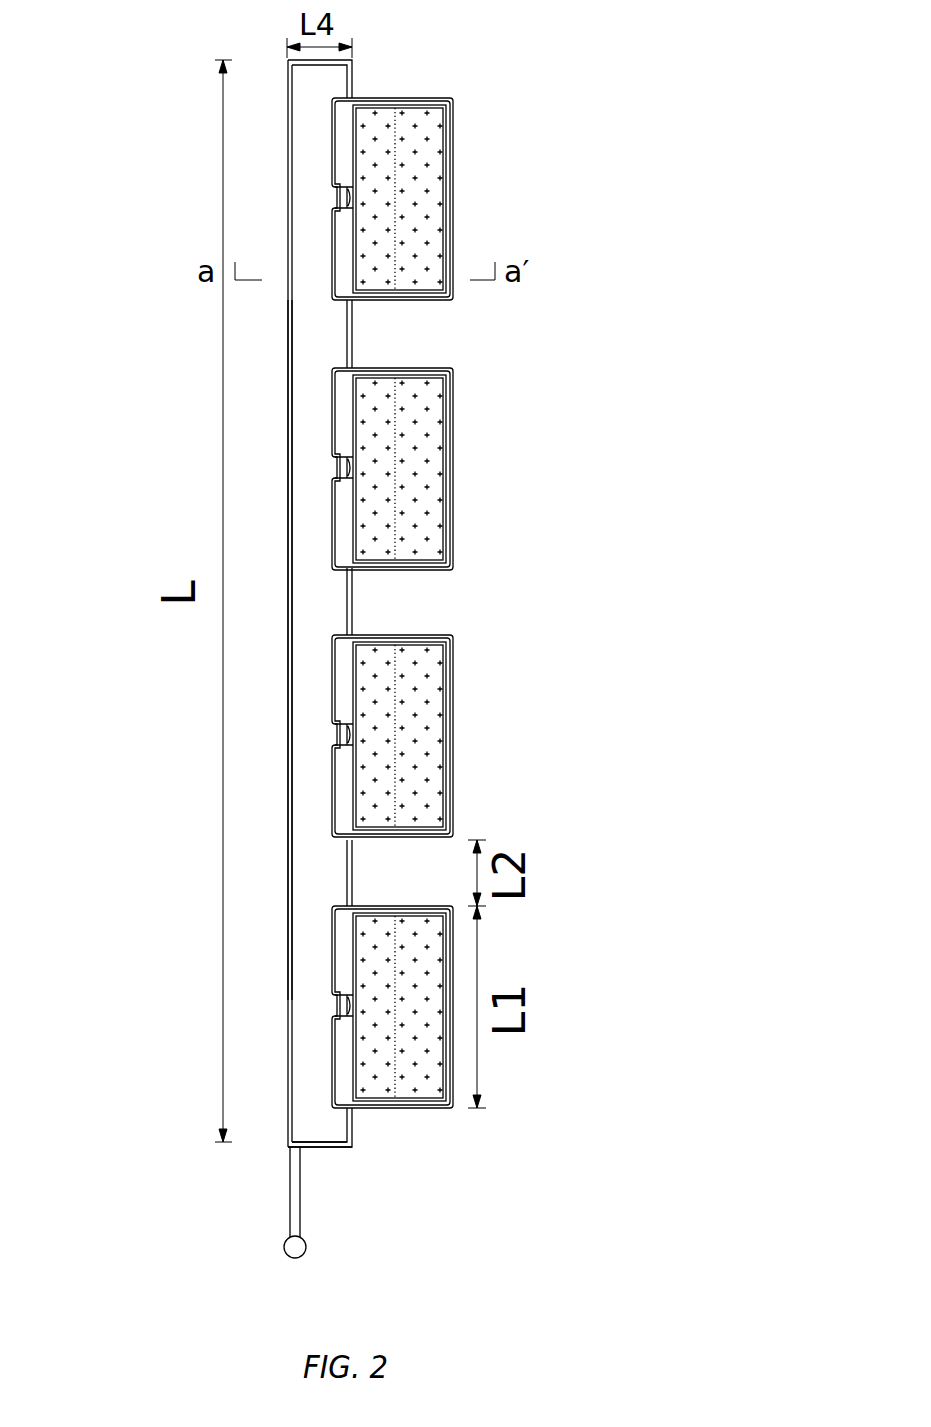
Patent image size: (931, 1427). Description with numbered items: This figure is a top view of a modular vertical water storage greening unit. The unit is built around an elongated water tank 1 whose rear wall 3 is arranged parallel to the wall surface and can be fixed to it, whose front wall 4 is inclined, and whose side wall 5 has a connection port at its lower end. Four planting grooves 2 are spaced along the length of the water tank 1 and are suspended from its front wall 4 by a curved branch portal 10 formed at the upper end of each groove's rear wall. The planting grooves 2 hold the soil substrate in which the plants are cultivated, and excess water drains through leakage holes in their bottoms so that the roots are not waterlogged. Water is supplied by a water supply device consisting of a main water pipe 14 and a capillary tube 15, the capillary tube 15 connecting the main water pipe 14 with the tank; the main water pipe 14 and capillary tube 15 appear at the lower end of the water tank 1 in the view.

The water tank 1 is at (216, 603).
The planting groove 2 is at (472, 453).
The rear wall of the water tank 3 is at (191, 650).
The front wall of the water tank 4 is at (477, 603).
The side wall of the water tank 5 is at (410, 1168).
The curved branch portal 10 is at (467, 711).
The main water pipe 14 is at (199, 1266).
The capillary tube 15 is at (196, 1197).